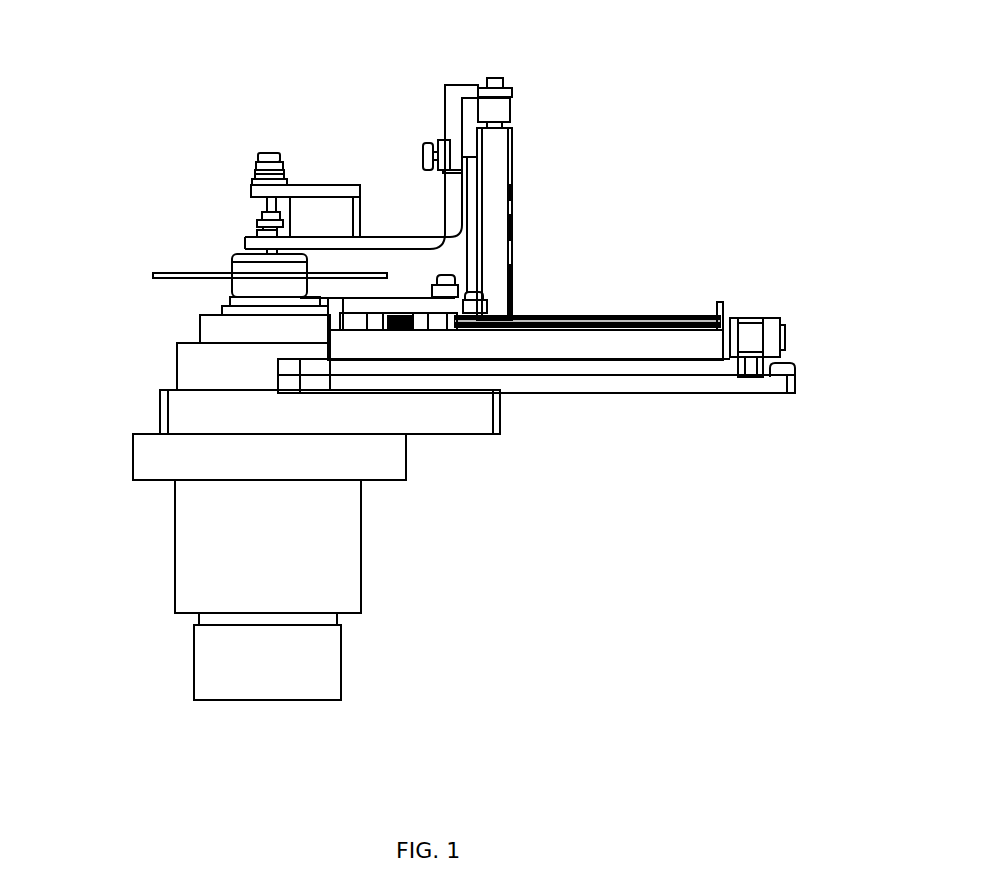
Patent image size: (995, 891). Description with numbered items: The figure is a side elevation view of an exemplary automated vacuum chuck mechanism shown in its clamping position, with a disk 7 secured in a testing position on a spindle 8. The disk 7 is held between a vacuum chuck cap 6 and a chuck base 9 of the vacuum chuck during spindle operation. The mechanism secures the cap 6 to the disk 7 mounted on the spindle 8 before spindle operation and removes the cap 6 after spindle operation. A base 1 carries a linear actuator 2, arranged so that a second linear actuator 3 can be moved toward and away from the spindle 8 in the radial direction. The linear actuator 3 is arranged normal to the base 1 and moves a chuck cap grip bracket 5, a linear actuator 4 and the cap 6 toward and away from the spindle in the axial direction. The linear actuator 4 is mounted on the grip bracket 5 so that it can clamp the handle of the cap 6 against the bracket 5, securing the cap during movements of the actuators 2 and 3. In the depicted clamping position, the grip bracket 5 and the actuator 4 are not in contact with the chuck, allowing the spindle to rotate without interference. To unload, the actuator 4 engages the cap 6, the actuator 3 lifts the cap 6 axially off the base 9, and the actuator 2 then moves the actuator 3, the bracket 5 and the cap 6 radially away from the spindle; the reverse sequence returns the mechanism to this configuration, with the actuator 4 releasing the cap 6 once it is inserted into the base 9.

The base 1 is at (563, 407).
The linear actuator 2 is at (757, 305).
The linear actuator 3 is at (528, 146).
The linear actuator 4 is at (265, 132).
The chuck cap grip bracket 5 is at (395, 219).
The vacuum chuck cap 6 is at (220, 249).
The disk 7 is at (161, 265).
The spindle 8 is at (118, 455).
The chuck base 9 is at (208, 305).